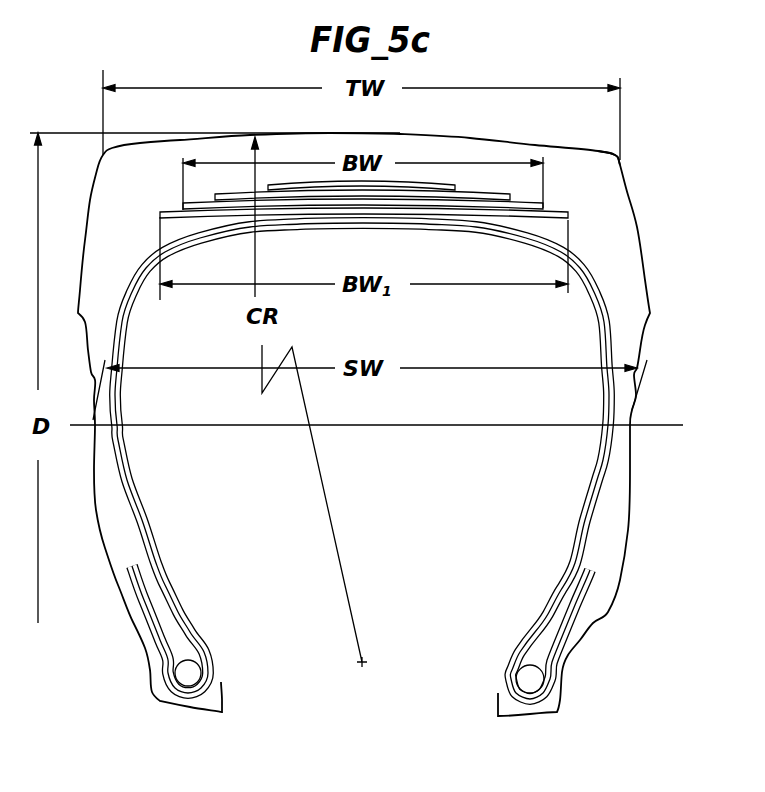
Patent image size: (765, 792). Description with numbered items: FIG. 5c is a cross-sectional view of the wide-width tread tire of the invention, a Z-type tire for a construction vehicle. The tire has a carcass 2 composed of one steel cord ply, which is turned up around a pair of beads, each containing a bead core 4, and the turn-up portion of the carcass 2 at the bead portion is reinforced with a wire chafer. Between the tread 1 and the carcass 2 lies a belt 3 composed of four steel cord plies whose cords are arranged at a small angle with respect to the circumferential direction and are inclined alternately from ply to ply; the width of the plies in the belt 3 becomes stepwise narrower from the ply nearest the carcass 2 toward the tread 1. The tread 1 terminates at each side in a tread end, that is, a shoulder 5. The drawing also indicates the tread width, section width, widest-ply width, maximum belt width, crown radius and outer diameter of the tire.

The tread 1 is at (608, 190).
The carcass 2 is at (598, 322).
The belt 3 is at (568, 221).
The bead core 4 is at (535, 687).
The tread end (shoulder) 5 is at (622, 160).